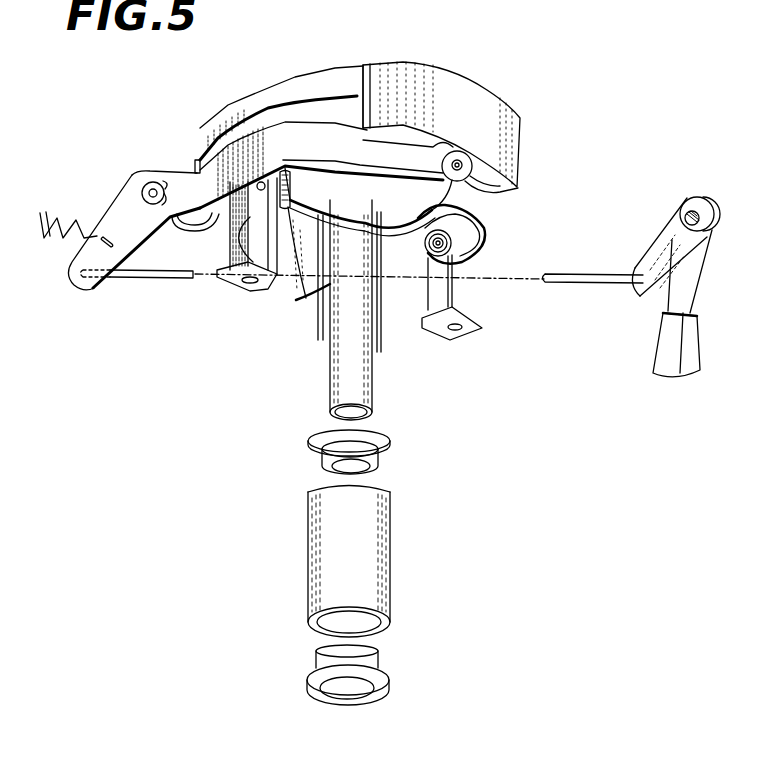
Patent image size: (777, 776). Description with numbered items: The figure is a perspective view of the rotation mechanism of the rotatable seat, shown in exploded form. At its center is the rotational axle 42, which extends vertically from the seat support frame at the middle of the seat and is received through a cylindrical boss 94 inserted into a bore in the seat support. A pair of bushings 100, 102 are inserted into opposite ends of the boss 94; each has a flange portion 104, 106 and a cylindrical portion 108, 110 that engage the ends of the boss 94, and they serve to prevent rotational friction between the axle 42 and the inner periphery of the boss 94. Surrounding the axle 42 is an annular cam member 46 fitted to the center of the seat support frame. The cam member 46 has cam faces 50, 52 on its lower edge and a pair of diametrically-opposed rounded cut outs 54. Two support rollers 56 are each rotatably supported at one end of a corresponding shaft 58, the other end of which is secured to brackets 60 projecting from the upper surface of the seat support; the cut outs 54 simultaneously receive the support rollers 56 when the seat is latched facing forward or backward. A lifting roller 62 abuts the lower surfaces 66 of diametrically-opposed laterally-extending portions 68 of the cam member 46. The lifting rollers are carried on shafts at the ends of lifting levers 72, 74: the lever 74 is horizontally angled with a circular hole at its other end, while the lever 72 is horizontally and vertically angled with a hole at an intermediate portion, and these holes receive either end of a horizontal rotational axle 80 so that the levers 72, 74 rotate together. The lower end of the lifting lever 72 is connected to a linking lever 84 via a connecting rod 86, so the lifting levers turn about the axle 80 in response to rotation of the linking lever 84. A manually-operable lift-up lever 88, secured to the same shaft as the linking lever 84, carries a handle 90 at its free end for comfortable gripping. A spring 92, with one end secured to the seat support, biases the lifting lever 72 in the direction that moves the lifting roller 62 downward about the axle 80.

The rotational axle 42 is at (362, 385).
The annular cam member 46 is at (325, 105).
The cam face 50 is at (283, 285).
The cam face 52 is at (318, 320).
The rounded cut outs 54 is at (316, 295).
The support rollers 56 is at (290, 178).
The shaft 58 is at (257, 183).
The brackets 60 is at (235, 278).
The lifting roller 62 is at (492, 193).
The lower surfaces 66 is at (520, 180).
The laterally-extending portions 68 is at (483, 92).
The lifting lever 72 is at (261, 182).
The lifting lever 74 is at (208, 227).
The rotational axle 80 is at (168, 190).
The linking lever 84 is at (663, 250).
The connecting rod 86 is at (158, 278).
The lift-up lever 88 is at (680, 282).
The handle 90 is at (665, 355).
The spring 92 is at (47, 215).
The cylindrical boss 94 is at (385, 540).
The bushing 100 is at (352, 454).
The bushing 102 is at (354, 681).
The flange portion 104 is at (308, 440).
The flange portion 106 is at (310, 688).
The cylindrical portion 108 is at (318, 460).
The cylindrical portion 110 is at (328, 656).